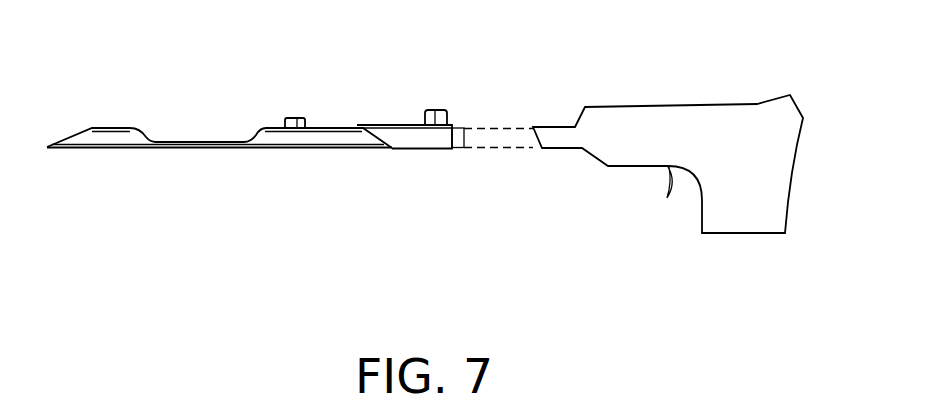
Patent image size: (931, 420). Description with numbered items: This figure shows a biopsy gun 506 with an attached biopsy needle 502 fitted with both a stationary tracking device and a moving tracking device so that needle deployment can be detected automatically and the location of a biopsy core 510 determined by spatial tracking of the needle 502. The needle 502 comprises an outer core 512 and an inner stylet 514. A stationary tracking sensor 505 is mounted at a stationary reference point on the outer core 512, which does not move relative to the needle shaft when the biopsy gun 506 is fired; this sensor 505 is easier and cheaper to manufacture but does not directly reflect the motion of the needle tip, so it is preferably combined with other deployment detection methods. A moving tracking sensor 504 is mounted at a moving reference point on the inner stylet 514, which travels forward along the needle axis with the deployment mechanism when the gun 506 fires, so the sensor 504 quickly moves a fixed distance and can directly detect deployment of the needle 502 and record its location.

The biopsy needle 502 is at (450, 230).
The moving tracking sensor 504 is at (297, 118).
The stationary tracking sensor 505 is at (435, 110).
The biopsy gun 506 is at (696, 113).
The biopsy core 510 is at (183, 118).
The outer core 512 is at (405, 149).
The inner stylet 514 is at (255, 148).